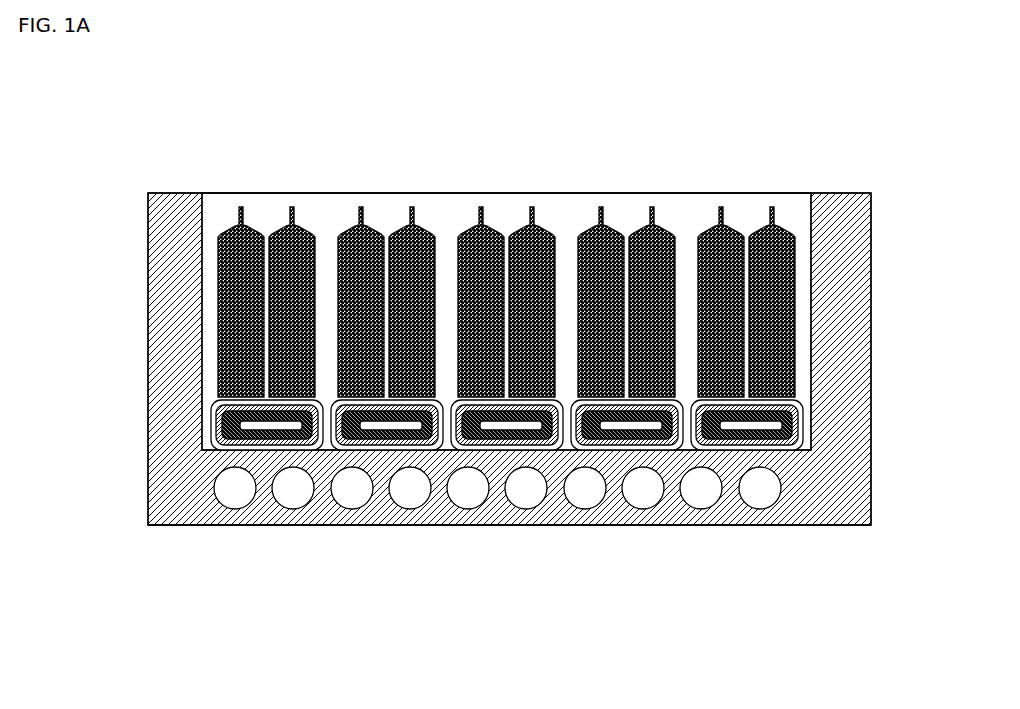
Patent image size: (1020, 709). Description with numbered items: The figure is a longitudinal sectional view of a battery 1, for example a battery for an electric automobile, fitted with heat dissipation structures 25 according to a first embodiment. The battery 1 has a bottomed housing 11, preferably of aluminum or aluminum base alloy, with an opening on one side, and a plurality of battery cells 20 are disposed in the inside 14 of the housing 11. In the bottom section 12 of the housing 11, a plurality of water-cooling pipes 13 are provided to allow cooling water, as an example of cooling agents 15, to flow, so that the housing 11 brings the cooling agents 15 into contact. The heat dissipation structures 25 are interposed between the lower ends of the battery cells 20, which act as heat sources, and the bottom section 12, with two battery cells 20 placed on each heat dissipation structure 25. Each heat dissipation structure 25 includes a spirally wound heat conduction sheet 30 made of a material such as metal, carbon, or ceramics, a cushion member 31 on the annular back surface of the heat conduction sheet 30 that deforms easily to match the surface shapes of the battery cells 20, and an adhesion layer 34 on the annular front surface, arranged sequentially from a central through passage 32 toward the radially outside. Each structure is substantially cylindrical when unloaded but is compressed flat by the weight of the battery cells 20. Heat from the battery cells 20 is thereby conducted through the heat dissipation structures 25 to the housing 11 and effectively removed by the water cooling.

The battery 1 is at (891, 153).
The housing 11 is at (852, 229).
The bottom section 12 is at (812, 528).
The water-cooling pipe 13 is at (497, 550).
The inside of the housing 14 is at (221, 210).
The cooling agent 15 is at (497, 488).
The battery cell 20 is at (775, 250).
The heat dissipation structure 25 is at (462, 439).
The heat conduction sheet 30 is at (212, 441).
The cushion member 31 is at (284, 427).
The through passage 32 is at (266, 445).
The adhesion layer 34 is at (212, 424).